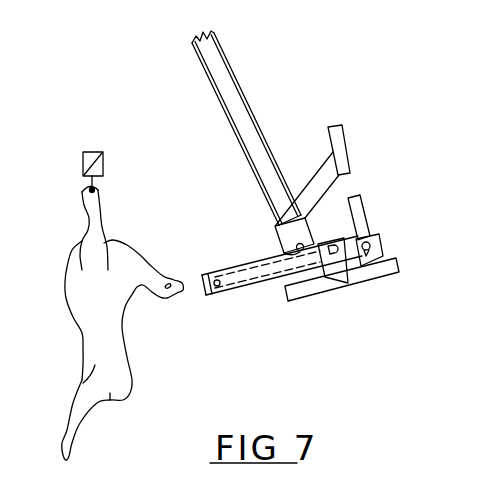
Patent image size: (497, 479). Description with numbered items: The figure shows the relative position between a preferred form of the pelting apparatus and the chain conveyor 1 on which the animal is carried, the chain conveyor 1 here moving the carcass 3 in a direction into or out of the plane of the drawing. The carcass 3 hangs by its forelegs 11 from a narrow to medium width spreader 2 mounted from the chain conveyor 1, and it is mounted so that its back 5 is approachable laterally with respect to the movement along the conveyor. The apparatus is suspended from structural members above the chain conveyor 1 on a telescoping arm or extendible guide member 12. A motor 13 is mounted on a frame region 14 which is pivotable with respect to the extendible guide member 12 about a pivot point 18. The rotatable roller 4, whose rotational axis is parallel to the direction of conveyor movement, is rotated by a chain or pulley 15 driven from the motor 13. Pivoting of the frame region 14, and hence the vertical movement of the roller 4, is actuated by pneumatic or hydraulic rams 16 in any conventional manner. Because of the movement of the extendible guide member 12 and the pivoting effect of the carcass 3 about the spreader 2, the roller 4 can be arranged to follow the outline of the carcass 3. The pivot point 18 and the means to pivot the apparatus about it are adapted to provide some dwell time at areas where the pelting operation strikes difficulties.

The chain conveyor 1 is at (93, 155).
The spreader 2 is at (90, 180).
The carcass 3 is at (103, 317).
The roller 4 is at (222, 293).
The back 5 is at (133, 383).
The forelegs 11 is at (100, 253).
The telescoping arm or extendible guide member 12 is at (248, 142).
The motor 13 is at (358, 236).
The frame region 14 is at (288, 297).
The chain or pulley 15 is at (338, 265).
The pneumatic or hydraulic rams 16 is at (372, 232).
The pivot point 18 is at (305, 246).